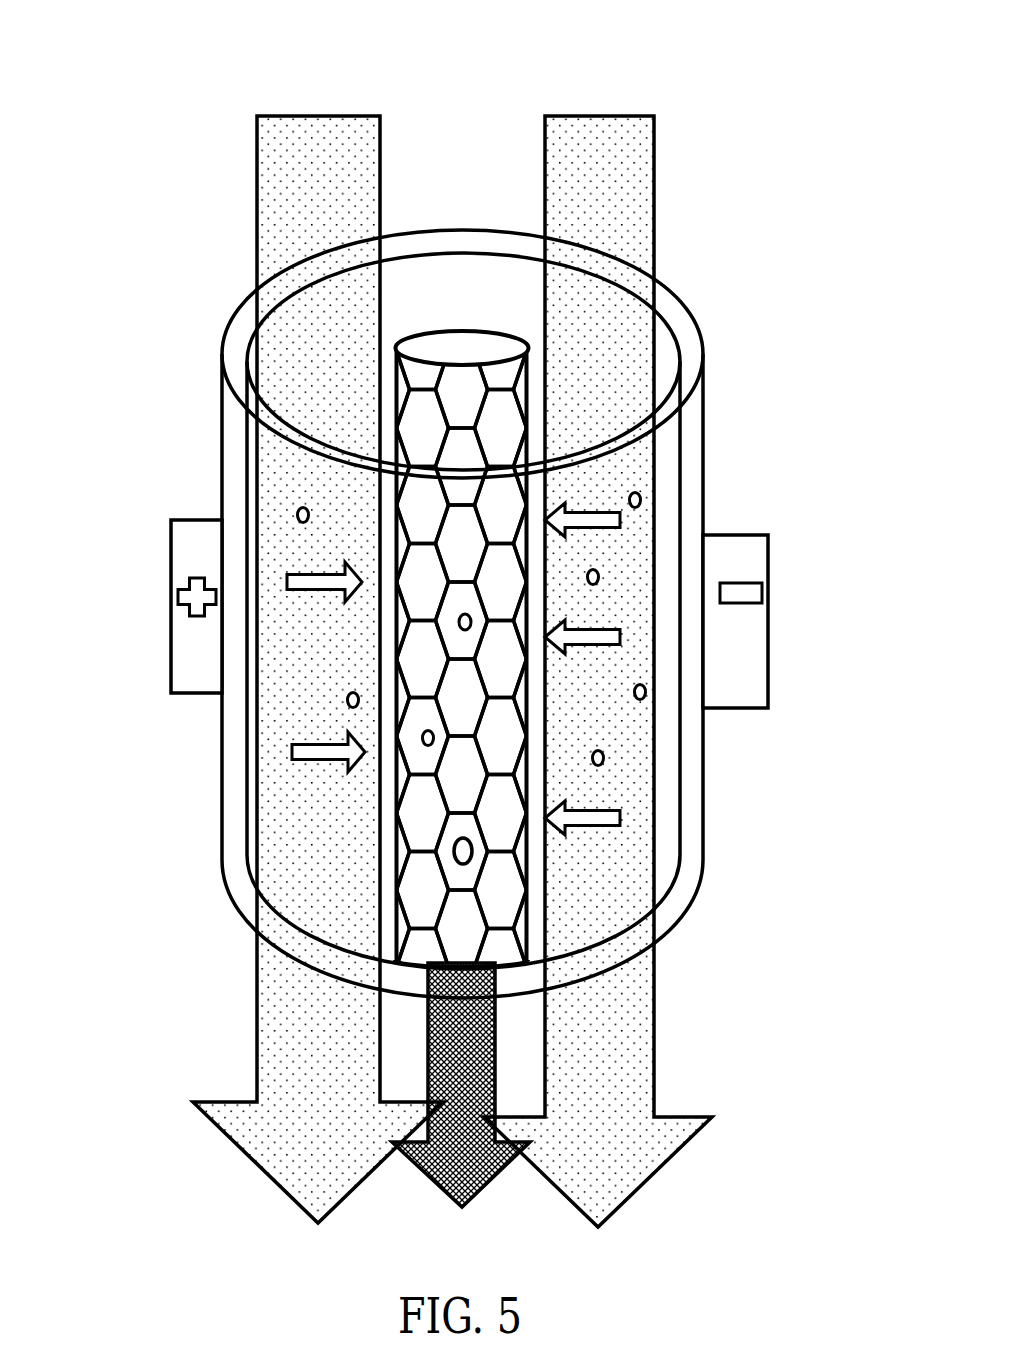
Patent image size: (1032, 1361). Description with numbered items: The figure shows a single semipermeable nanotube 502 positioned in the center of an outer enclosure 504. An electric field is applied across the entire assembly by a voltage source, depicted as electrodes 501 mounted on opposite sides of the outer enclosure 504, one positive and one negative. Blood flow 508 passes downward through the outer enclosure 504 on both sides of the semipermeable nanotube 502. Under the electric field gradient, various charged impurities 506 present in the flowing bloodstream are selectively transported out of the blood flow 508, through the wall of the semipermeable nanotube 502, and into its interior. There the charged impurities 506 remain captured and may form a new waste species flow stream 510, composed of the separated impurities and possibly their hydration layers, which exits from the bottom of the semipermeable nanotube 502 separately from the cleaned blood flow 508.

The electrodes 501 is at (183, 557).
The semipermeable nanotube 502 is at (415, 337).
The outer enclosure 504 is at (219, 463).
The charged impurities 506 is at (305, 535).
The blood flow 508 is at (598, 110).
The waste species flow stream 510 is at (445, 1163).